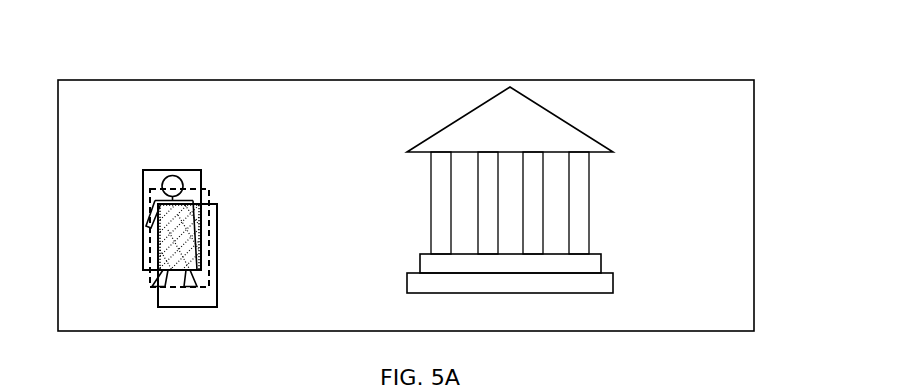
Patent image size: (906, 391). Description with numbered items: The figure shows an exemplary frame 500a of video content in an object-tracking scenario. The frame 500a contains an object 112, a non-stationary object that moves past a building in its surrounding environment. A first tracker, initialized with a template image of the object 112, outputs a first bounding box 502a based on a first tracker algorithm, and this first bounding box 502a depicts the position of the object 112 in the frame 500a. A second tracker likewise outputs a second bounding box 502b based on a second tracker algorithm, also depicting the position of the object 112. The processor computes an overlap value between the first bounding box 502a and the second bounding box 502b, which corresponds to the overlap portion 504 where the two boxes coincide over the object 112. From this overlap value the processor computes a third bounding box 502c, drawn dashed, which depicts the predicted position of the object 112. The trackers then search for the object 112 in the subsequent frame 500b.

The exemplary frame 500a is at (731, 57).
The exemplary frame 500b is at (761, 382).
The first bounding box 502a is at (188, 170).
The second bounding box 502b is at (217, 240).
The third bounding box 502c is at (210, 197).
The object 112 is at (148, 217).
The overlap portion 504 is at (165, 267).